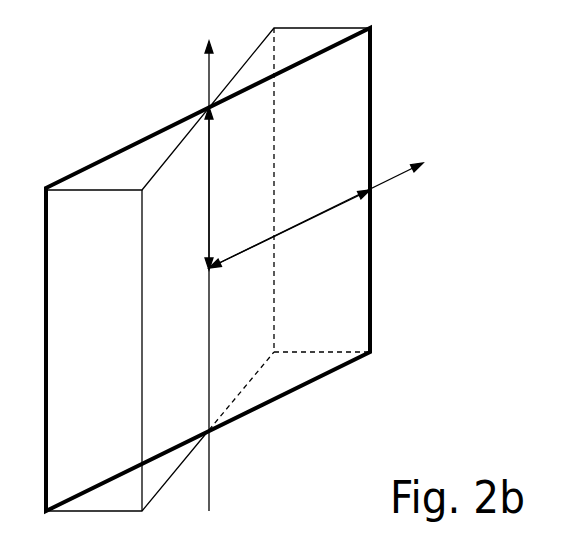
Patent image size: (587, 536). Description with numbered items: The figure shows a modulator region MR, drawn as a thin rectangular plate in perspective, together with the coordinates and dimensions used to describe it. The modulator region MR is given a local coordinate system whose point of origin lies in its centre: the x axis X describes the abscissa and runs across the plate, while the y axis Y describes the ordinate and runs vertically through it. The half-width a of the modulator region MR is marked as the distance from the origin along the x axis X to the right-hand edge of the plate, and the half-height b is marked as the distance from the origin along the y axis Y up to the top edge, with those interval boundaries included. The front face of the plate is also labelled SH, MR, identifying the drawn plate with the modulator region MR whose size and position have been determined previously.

The sheet SH is at (136, 141).
The modulator region MR is at (208, 269).
The half-width a is at (289, 229).
The half-height b is at (217, 188).
The x axis X is at (325, 215).
The y axis Y is at (217, 274).